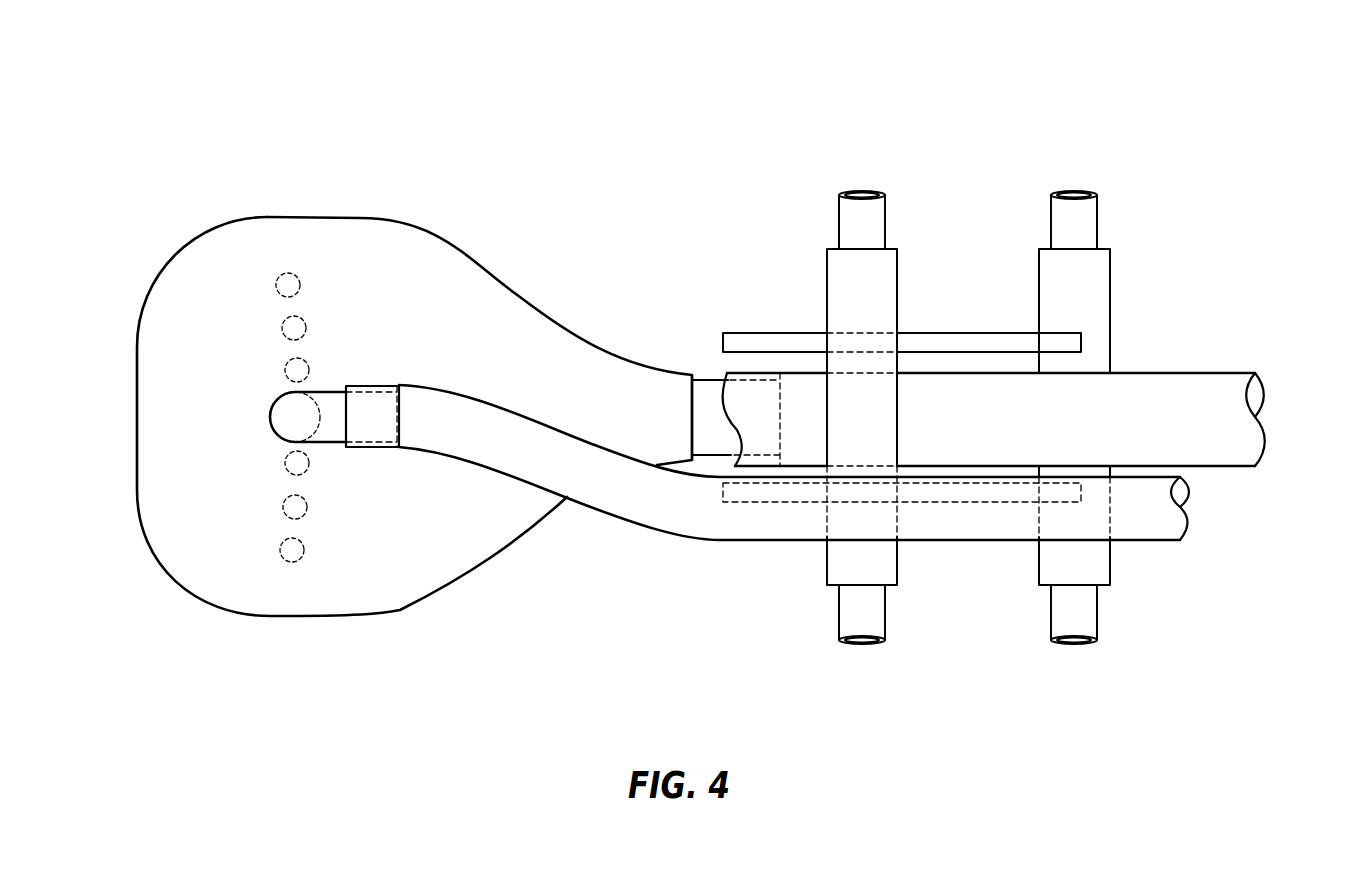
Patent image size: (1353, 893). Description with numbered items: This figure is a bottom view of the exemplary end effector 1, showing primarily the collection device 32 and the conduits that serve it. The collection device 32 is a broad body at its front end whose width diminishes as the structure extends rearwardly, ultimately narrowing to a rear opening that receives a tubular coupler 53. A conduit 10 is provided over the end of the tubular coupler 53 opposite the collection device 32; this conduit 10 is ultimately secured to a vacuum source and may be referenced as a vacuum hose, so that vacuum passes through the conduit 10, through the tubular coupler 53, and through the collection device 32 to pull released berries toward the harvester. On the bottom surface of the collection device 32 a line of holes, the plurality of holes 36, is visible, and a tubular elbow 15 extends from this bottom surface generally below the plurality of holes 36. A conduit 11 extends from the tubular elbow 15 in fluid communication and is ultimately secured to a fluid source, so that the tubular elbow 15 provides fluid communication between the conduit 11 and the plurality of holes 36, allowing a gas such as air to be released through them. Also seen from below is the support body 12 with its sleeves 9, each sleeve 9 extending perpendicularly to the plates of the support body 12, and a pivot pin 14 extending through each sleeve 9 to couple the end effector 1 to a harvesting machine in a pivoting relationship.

The end effector 1 is at (1233, 97).
The sleeve 9 is at (887, 287).
The conduit 10 is at (1172, 387).
The conduit 11 is at (658, 508).
The support body 12 is at (777, 343).
The pivot pin 14 is at (858, 208).
The tubular elbow 15 is at (328, 400).
The collection device 32 is at (402, 200).
The plurality of holes 36 is at (281, 328).
The tubular coupler 53 is at (707, 395).